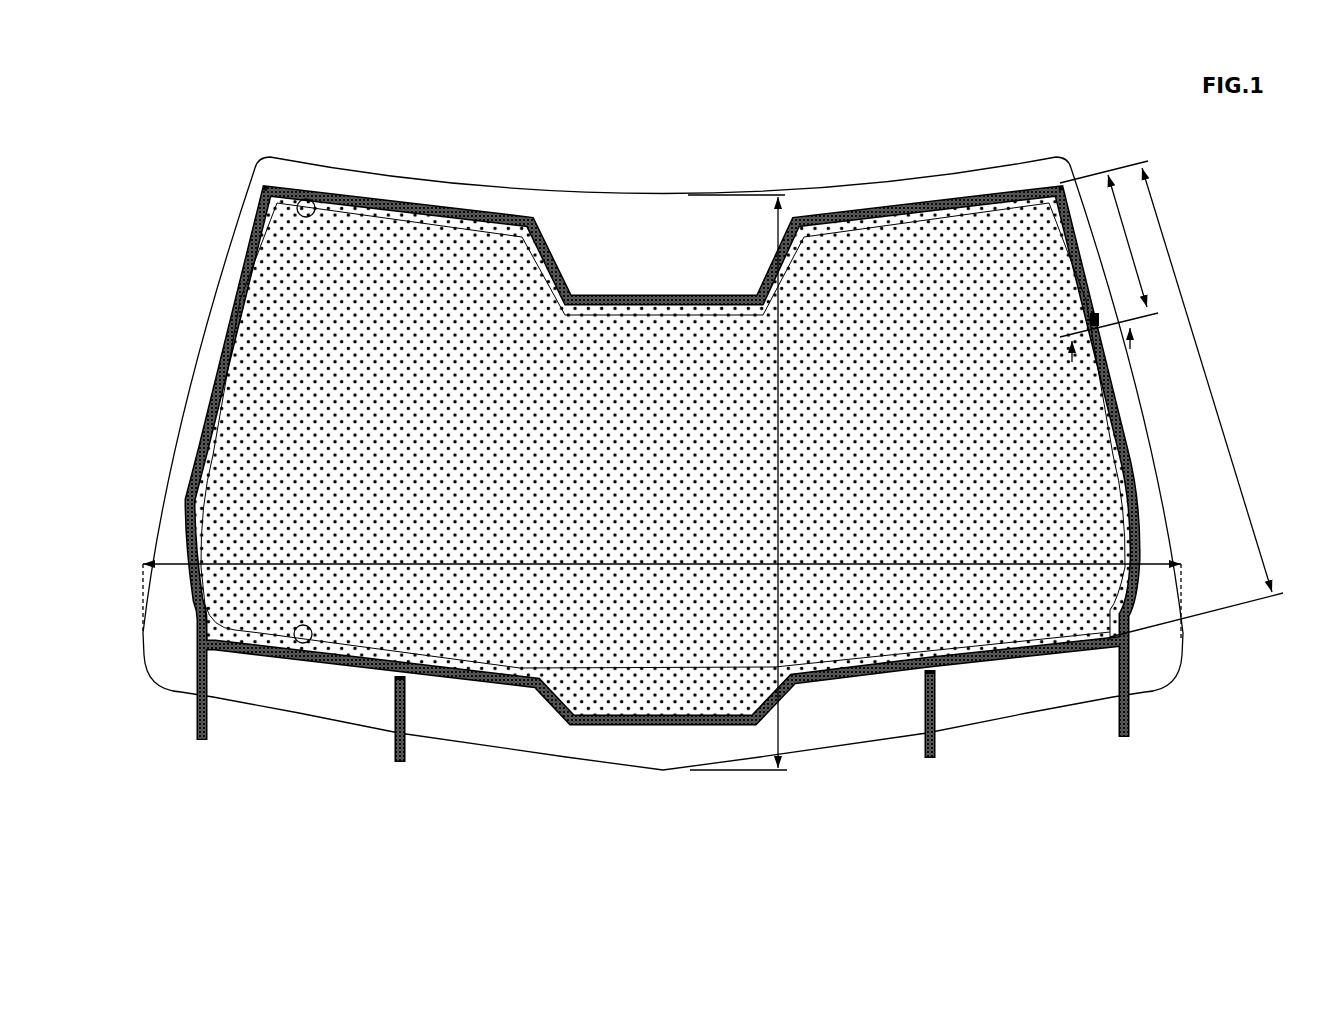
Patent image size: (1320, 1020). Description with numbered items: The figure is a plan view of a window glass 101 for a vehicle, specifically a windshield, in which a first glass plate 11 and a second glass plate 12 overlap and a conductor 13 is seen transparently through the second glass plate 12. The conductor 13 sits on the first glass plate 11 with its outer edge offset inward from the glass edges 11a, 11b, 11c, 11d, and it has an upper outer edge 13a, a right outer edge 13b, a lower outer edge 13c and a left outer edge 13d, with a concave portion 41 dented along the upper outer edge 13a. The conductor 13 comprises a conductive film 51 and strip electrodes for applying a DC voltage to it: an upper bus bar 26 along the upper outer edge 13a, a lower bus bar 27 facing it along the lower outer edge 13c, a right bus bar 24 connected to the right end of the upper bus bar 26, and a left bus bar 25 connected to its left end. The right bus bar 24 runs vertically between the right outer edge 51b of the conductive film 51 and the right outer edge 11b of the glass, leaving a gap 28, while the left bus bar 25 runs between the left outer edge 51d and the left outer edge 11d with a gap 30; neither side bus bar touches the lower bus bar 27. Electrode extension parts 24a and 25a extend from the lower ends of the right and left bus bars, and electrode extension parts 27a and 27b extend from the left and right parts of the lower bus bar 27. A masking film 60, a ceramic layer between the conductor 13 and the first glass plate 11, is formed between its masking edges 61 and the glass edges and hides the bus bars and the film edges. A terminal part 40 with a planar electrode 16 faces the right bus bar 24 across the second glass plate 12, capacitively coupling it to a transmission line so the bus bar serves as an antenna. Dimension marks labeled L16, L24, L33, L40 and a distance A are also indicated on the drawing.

The window glass 101 is at (191, 133).
The first glass plate 11 is at (848, 200).
The glass edge 11a is at (882, 215).
The right outer edge 11b is at (1152, 480).
The glass edge 11c is at (482, 754).
The left outer edge 11d is at (185, 397).
The second glass plate 12 is at (815, 210).
The conductor 13 is at (669, 461).
The upper outer edge 13a is at (925, 205).
The right outer edge 13b is at (1140, 514).
The lower outer edge 13c is at (832, 685).
The left outer edge 13d is at (196, 442).
The planar electrode 16 is at (1098, 322).
The right bus bar 24 is at (1135, 452).
The electrode extension part 24a is at (1128, 727).
The left bus bar 25 is at (215, 359).
The electrode extension part 25a is at (197, 727).
The upper bus bar 26 is at (1034, 183).
The lower bus bar 27 is at (985, 657).
The electrode extension part 27a is at (395, 752).
The electrode extension part 27b is at (935, 747).
The gap 28 is at (1135, 540).
The gap 30 is at (200, 458).
The terminal part 40 is at (1094, 319).
The concave portion 41 is at (638, 217).
The conductive film 51 is at (973, 232).
The right outer edge 51b is at (1118, 422).
The left outer edge 51d is at (228, 320).
The masking film 60 is at (383, 190).
The masking edges 61 is at (306, 199).
The length L16 is at (1113, 256).
The length L24 is at (1171, 399).
The width L33 is at (662, 591).
The height L40 is at (737, 482).
The distance A is at (1108, 357).